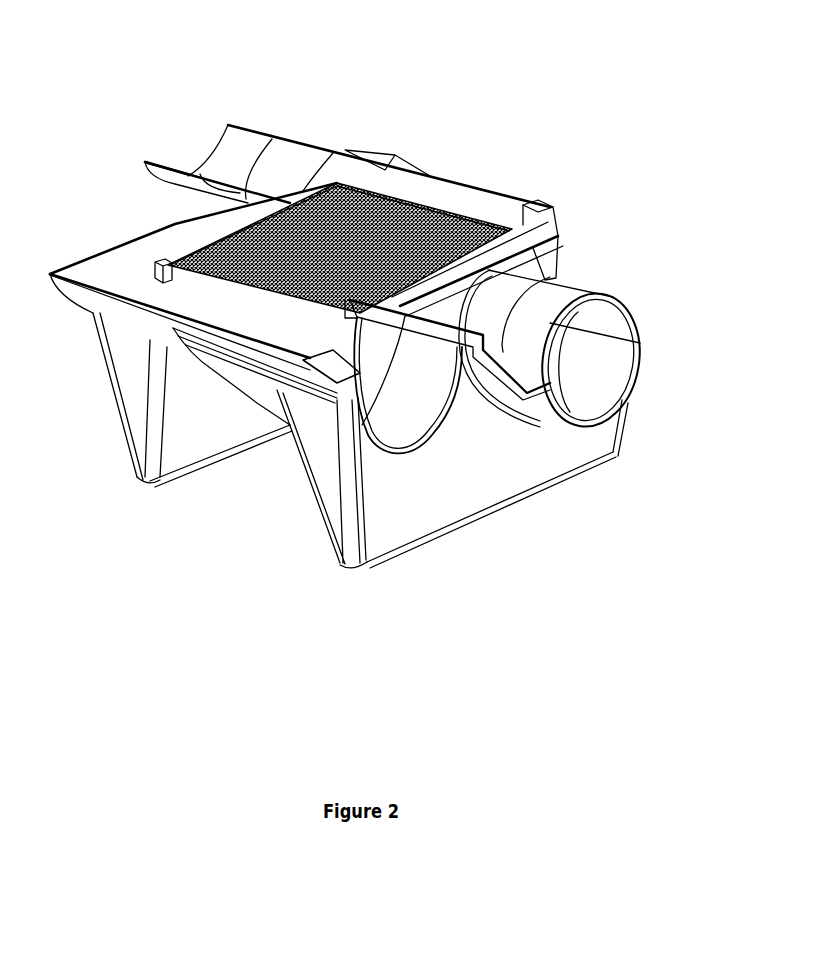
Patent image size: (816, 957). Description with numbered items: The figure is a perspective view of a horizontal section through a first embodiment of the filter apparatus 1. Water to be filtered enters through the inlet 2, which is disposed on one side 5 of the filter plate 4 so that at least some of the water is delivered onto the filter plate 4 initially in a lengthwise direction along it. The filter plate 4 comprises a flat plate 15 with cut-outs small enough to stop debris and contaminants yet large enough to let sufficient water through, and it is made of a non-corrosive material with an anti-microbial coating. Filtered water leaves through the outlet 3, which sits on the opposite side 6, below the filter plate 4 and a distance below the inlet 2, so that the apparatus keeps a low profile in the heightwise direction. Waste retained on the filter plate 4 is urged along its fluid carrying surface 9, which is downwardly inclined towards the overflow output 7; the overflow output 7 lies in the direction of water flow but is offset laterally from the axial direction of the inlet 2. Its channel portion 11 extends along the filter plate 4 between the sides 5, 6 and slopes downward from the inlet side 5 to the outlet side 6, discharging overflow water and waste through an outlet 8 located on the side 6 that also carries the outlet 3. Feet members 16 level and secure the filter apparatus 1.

The filter apparatus 1 is at (522, 77).
The inlet 2 is at (228, 124).
The outlet 3 is at (550, 322).
The filter plate 4 is at (300, 262).
The side 5 is at (177, 213).
The opposite side 6 is at (540, 255).
The overflow output 7 is at (187, 293).
The outlet 8 is at (410, 450).
The fluid carrying surface 9 is at (408, 228).
The channel portion 11 is at (263, 322).
The flat plate 15 is at (343, 207).
The feet members 16 is at (232, 434).